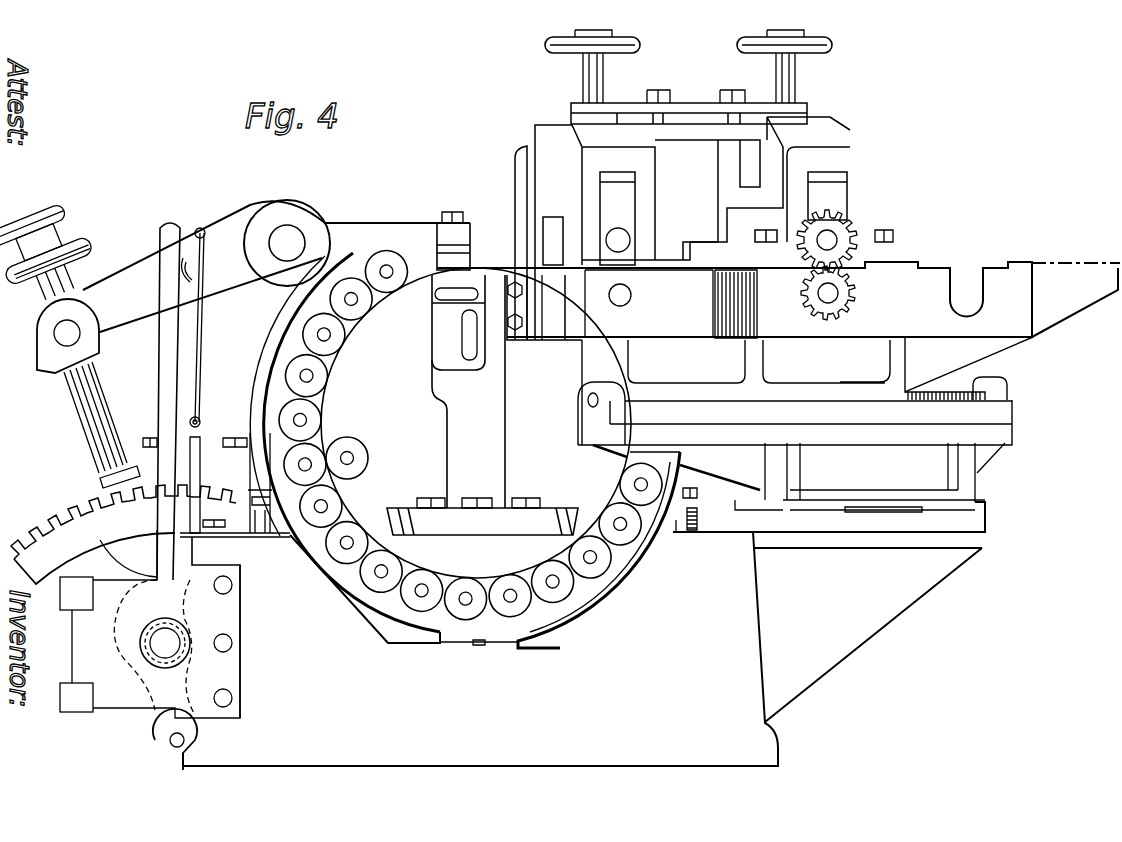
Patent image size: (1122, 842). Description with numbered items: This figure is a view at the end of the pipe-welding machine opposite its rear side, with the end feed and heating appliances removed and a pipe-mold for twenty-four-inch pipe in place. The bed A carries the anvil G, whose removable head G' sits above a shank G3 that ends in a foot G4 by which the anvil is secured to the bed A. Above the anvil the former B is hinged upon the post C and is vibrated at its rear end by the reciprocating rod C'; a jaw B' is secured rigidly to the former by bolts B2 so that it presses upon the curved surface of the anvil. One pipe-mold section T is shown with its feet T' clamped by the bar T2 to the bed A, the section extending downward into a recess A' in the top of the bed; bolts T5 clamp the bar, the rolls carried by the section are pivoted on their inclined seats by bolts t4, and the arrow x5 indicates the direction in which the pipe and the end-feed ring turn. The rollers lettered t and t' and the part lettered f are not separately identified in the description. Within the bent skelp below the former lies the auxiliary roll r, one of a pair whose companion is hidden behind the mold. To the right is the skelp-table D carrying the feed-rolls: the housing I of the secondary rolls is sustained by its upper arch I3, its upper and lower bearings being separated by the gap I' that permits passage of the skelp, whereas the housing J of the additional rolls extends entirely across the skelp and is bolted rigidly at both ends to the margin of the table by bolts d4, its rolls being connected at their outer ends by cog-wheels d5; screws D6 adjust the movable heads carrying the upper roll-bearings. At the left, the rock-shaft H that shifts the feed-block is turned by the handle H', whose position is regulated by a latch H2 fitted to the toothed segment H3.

The bed A is at (532, 599).
The recess A' is at (587, 644).
The former B is at (276, 266).
The jaw B' is at (453, 251).
The bolts B2 is at (452, 212).
The post C is at (374, 449).
The reciprocating rod C' is at (70, 343).
The skelp-table D is at (778, 353).
The screws D6 is at (797, 72).
The anvil G is at (458, 322).
The removable head G' is at (493, 305).
The shank G3 is at (468, 391).
The foot G4 is at (482, 517).
The rock-shaft H is at (157, 739).
The handle H' is at (180, 388).
The latch H2 is at (200, 464).
The toothed segment H3 is at (48, 520).
The housing I is at (671, 202).
The gap I' is at (649, 289).
The upper arch I3 is at (544, 232).
The housing J is at (766, 188).
The bolts d4 is at (885, 228).
The cog-wheels d5 is at (800, 298).
The hub f is at (170, 641).
The auxiliary roll r is at (370, 468).
The roller t is at (313, 420).
The roller t' is at (613, 519).
The bolts t4 is at (388, 278).
The arrows x5 is at (402, 330).
The mold section T is at (599, 546).
The feet T' is at (666, 540).
The bar T2 is at (692, 498).
The bolts T5 is at (693, 530).